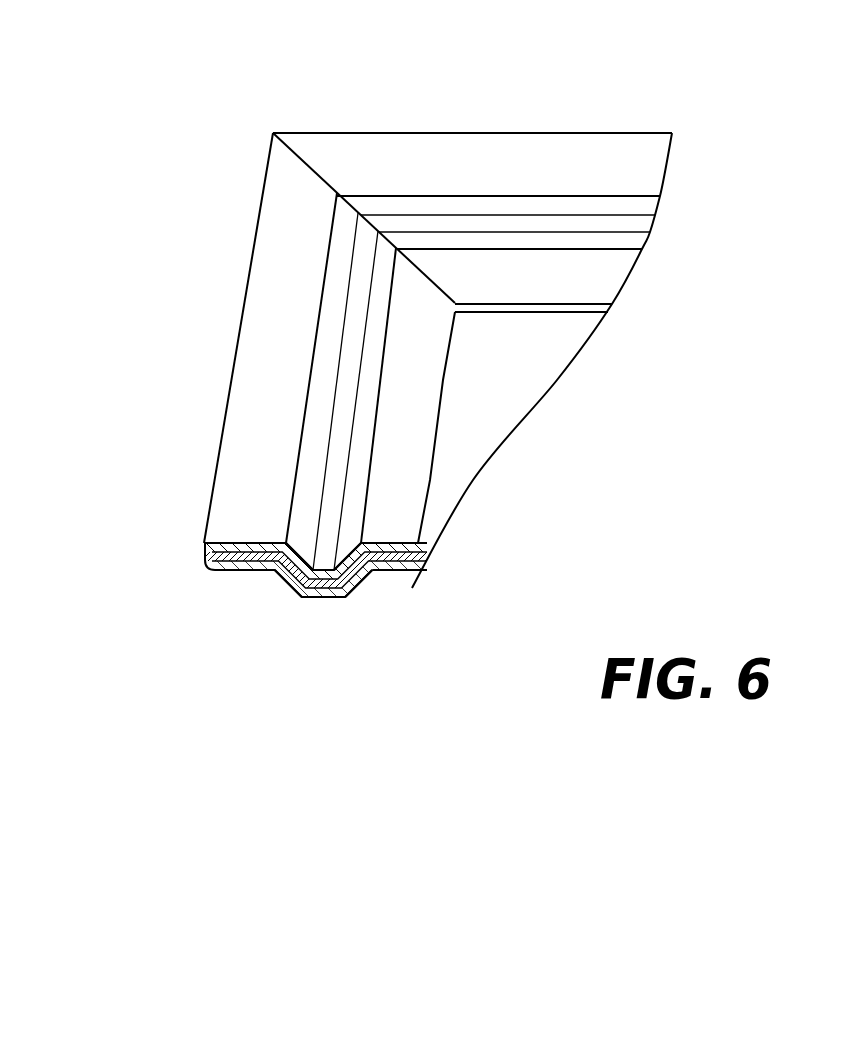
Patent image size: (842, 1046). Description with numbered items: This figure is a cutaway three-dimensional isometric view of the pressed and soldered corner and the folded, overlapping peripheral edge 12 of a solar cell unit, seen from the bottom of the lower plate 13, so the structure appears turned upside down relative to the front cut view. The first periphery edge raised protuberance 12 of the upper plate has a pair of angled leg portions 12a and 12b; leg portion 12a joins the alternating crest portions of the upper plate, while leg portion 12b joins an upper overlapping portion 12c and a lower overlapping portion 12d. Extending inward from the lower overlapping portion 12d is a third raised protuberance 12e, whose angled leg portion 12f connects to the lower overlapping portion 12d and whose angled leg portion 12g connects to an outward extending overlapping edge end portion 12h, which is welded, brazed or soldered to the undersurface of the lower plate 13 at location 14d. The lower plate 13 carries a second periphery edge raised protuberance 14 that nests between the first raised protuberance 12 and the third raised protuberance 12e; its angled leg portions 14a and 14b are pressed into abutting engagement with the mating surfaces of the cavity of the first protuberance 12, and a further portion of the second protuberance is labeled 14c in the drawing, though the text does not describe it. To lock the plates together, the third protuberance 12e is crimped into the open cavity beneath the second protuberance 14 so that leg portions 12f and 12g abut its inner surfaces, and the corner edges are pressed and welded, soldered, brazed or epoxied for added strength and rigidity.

The first periphery edge raised protuberance 12 is at (328, 602).
The angled leg portion 12a is at (357, 598).
The angled leg portion 12b is at (297, 572).
The upper overlapping portion 12c is at (238, 568).
The lower overlapping portion 12d is at (313, 166).
The third raised protuberance 12e is at (377, 231).
The angled leg portion 12f is at (358, 212).
The angled leg portion 12g is at (396, 248).
The outward extending overlapping edge end portion 12h is at (424, 270).
The lower plate 13 is at (466, 457).
The second periphery edge raised protuberance 14 is at (313, 600).
The angled leg portion 14a is at (361, 584).
The angled leg portion 14b is at (287, 568).
The coating layer portion 14c is at (245, 570).
The weld location on lower plate 14d is at (455, 312).